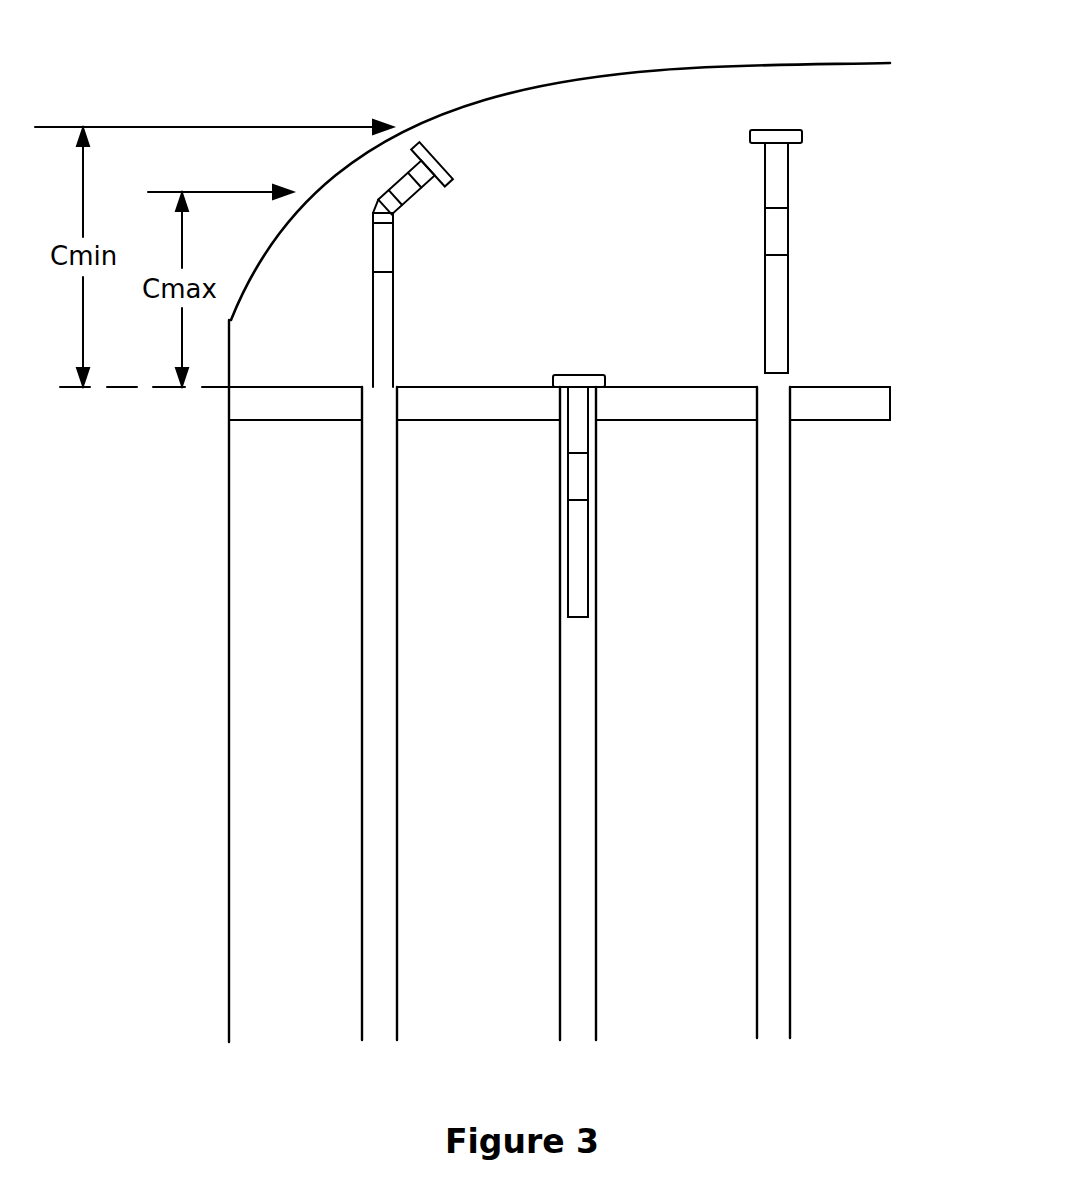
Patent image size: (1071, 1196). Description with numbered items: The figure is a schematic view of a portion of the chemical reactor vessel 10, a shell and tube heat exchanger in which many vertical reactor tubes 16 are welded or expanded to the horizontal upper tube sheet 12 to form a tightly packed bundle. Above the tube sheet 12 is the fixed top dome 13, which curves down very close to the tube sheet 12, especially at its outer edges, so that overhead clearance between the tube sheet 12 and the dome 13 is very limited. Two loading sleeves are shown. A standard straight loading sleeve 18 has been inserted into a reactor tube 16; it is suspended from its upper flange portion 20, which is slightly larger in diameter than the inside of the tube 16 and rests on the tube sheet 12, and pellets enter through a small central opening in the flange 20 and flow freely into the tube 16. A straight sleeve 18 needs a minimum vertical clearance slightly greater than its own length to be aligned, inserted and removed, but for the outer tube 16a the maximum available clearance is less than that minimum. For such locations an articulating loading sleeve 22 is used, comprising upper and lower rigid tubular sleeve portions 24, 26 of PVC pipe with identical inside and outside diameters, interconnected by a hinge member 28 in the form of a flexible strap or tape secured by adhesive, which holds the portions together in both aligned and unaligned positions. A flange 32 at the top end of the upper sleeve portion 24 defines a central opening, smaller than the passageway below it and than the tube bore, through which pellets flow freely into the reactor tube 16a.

The chemical reactor vessel 10 is at (229, 714).
The upper tube sheet 12 is at (862, 387).
The top dome 13 is at (630, 65).
The reactor tube 16 is at (560, 841).
The reactor tube near outer edge 16a is at (362, 862).
The loading sleeve 18 is at (765, 176).
The upper flange portion 20 is at (793, 130).
The articulating loading sleeve 22 is at (455, 251).
The upper rigid tubular sleeve portion 24 is at (378, 198).
The lower rigid tubular sleeve portion 26 is at (395, 320).
The hinge member 28 is at (397, 210).
The flange 32 is at (450, 175).